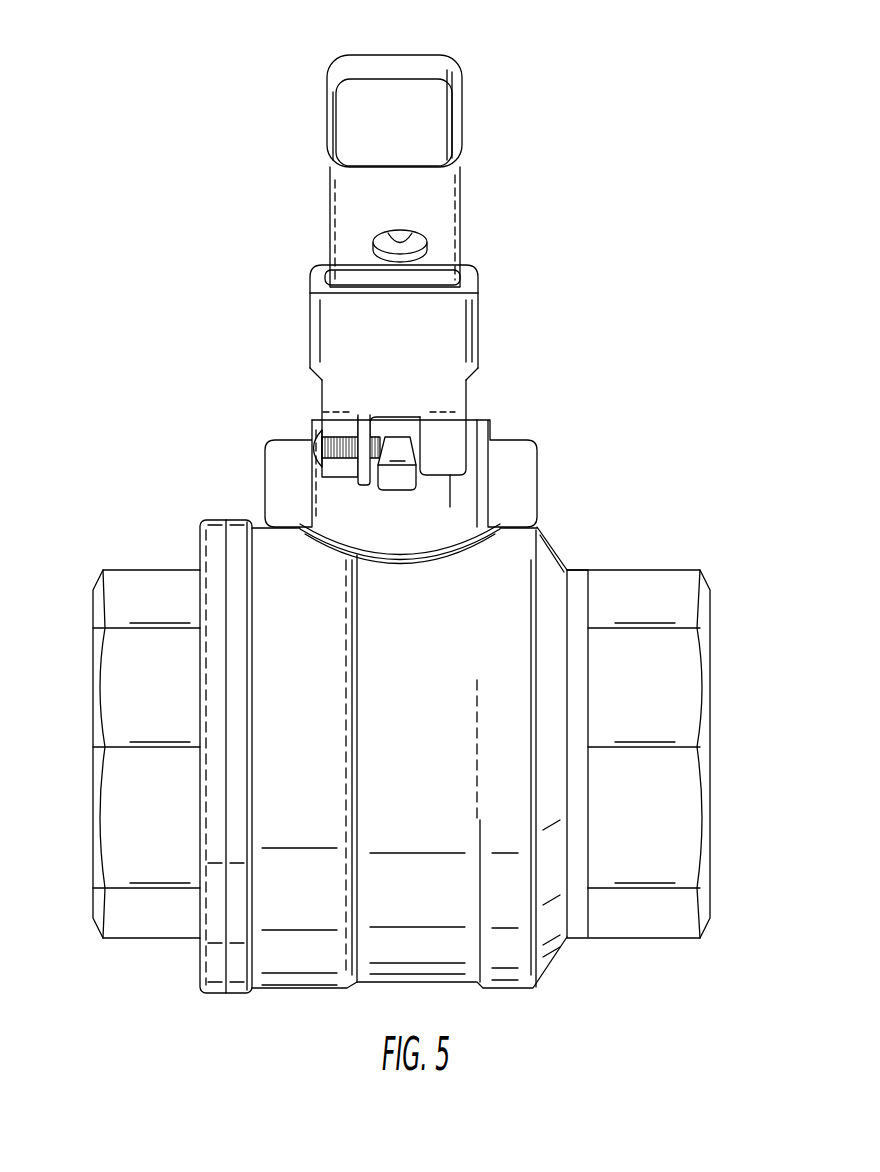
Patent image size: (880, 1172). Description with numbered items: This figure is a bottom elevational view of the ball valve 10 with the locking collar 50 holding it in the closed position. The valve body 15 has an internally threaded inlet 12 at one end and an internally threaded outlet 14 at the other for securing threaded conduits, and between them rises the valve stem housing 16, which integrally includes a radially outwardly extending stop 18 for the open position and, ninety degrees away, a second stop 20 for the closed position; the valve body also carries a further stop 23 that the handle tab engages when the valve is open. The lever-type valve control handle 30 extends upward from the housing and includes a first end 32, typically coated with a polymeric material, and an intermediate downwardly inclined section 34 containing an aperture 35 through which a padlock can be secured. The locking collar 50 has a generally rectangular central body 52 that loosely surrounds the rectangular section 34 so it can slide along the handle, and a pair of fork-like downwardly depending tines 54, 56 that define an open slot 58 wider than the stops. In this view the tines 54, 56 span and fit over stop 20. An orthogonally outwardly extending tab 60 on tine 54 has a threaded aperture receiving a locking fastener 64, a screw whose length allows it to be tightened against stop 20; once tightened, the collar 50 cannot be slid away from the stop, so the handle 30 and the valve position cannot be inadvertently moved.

The ball valve 10 is at (176, 966).
The internally threaded inlet 12 is at (95, 612).
The internally threaded outlet 14 is at (700, 622).
The valve body 15 is at (429, 750).
The valve stem housing 16 is at (470, 508).
The stop 18 is at (528, 468).
The second stop 20 is at (402, 481).
The stop 23 is at (273, 466).
The valve control handle 30 is at (444, 124).
The first end 32 is at (418, 70).
The intermediate downwardly inclined section 34 is at (450, 222).
The aperture 35 is at (402, 241).
The locking collar 50 is at (478, 366).
The central body 52 is at (423, 343).
The tine 54 is at (333, 421).
The tine 56 is at (452, 445).
The open slot 58 is at (415, 423).
The tab 60 is at (361, 488).
The locking fastener 64 is at (330, 458).